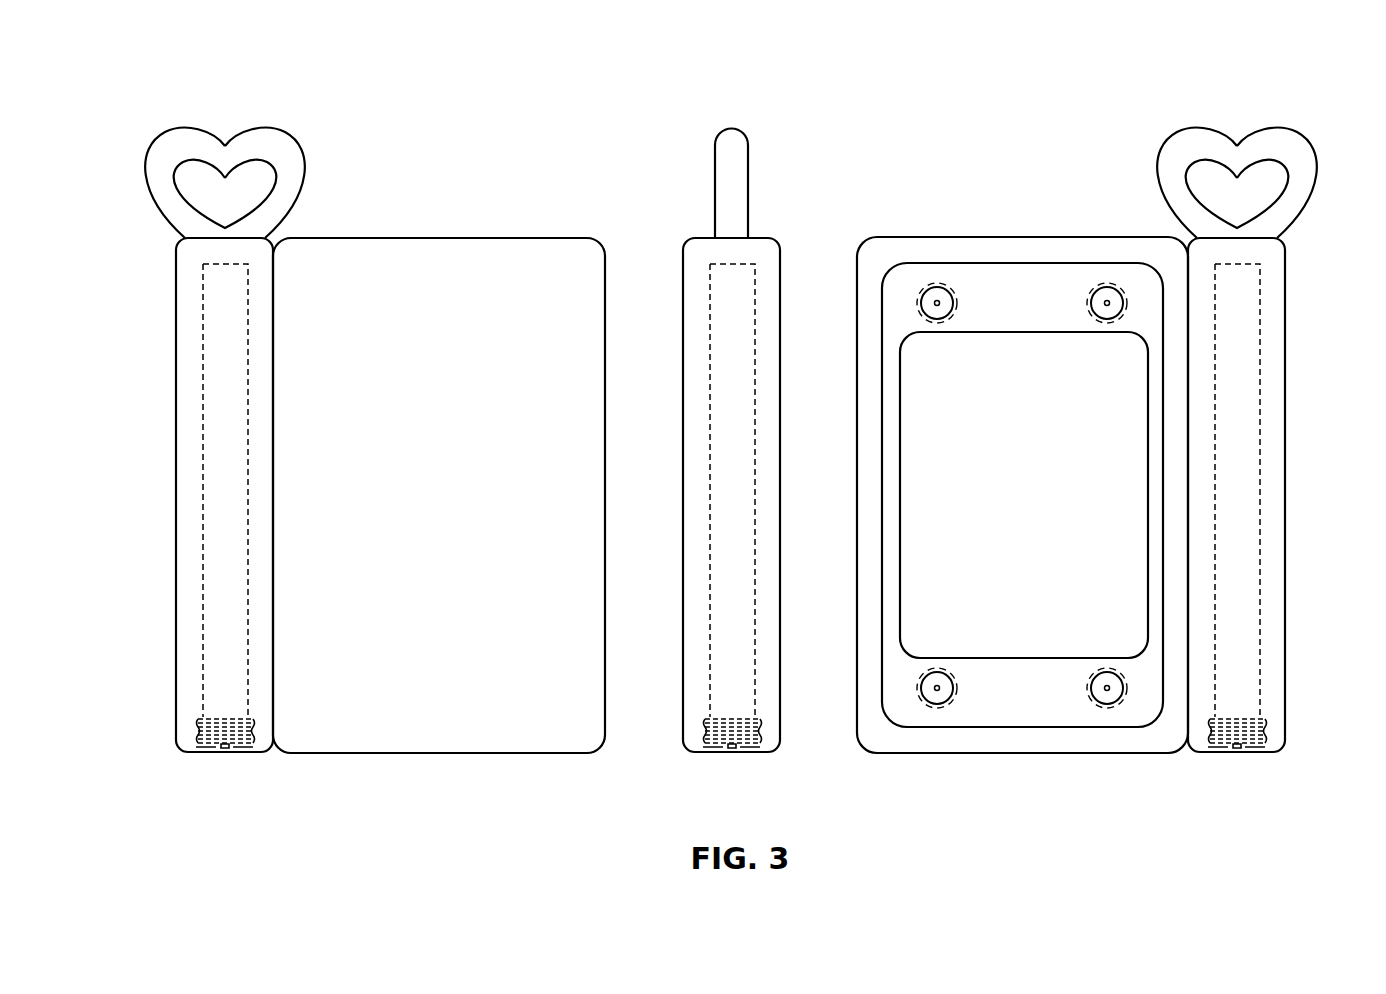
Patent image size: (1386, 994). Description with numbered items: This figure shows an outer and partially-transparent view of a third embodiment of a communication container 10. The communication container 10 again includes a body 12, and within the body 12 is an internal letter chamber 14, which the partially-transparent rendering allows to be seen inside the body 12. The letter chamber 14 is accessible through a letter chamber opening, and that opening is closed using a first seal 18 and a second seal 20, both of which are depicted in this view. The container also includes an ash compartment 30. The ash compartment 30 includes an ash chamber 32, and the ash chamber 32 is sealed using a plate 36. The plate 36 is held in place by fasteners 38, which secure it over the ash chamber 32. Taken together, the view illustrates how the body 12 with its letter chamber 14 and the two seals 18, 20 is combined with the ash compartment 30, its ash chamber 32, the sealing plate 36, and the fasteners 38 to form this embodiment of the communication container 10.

The communication container 10 is at (1272, 34).
The body 12 is at (447, 180).
The letter chamber 14 is at (224, 495).
The first seal 18 is at (282, 153).
The second seal 20 is at (228, 752).
The ash compartment 30 is at (1040, 180).
The ash chamber 32 is at (1070, 600).
The plate 36 is at (1000, 600).
The fasteners 38 is at (1107, 697).